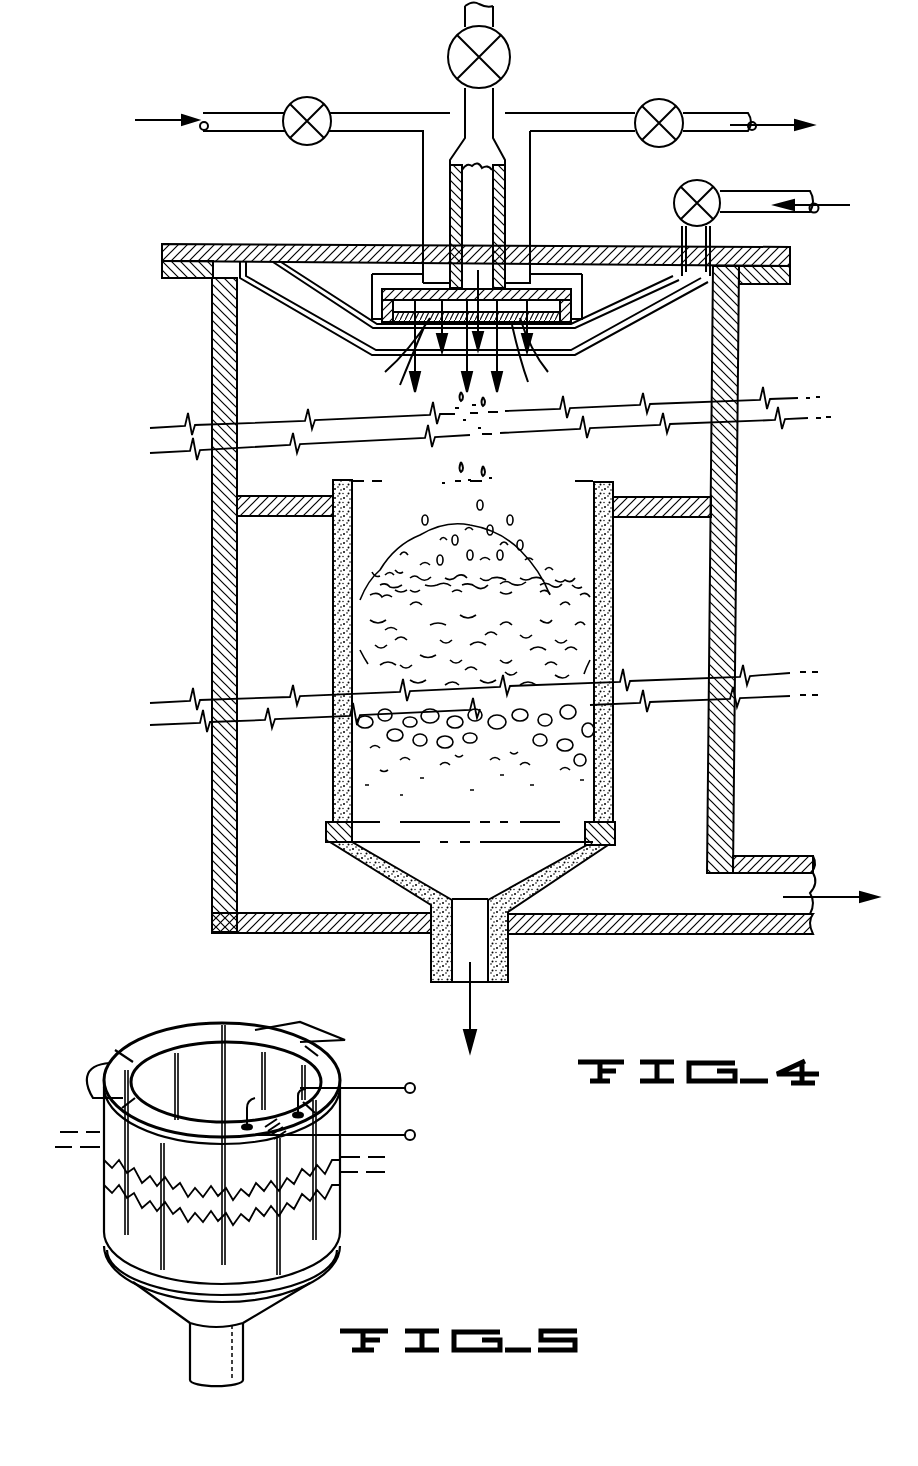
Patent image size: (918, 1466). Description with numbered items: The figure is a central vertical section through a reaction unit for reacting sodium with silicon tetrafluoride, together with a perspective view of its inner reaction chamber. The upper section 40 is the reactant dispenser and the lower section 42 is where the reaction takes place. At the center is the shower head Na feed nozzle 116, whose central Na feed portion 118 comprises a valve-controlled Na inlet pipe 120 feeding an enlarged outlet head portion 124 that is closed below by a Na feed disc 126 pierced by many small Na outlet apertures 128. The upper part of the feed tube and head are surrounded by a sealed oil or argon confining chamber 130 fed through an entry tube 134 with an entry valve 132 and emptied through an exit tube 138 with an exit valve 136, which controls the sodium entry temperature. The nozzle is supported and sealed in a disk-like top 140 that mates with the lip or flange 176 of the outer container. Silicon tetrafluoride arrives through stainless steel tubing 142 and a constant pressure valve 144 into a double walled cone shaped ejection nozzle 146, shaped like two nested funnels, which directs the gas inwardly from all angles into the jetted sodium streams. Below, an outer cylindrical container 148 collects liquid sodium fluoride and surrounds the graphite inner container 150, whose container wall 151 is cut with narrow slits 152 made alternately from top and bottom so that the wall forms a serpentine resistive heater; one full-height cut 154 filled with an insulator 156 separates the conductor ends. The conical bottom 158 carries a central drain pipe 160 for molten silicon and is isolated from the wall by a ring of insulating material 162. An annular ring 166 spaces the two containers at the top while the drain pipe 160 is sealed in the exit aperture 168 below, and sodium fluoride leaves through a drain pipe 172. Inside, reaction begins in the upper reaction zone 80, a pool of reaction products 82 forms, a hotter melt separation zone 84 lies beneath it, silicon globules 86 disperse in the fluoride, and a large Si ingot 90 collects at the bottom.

In FIG. 4, the upper section 40 is at (170, 188).
In FIG. 4, the lower section 42 is at (158, 602).
In FIG. 4, the upper reaction zone 80 is at (590, 527).
In FIG. 4, the pool of reaction products 82 is at (520, 612).
In FIG. 4, the melt separation zone 84 is at (575, 715).
In FIG. 4, the Si globules 86 is at (580, 748).
In FIG. 4, the Si ingot 90 is at (492, 810).
In FIG. 4, the shower head Na feed nozzle 116 is at (561, 222).
In FIG. 4, the central Na feed portion 118 is at (372, 345).
In FIG. 4, the Na inlet pipe 120 is at (497, 50).
In FIG. 4, the enlarged outlet head portion 124 is at (571, 325).
In FIG. 4, the Na feed disc 126 is at (422, 338).
In FIG. 4, the Na outlet apertures 128 is at (508, 345).
In FIG. 4, the oil or argon confining chamber 130 is at (430, 190).
In FIG. 4, the entry valve 132 is at (300, 102).
In FIG. 4, the entry tube 134 is at (368, 112).
In FIG. 4, the exit valve 136 is at (652, 105).
In FIG. 4, the oil or argon exit tube 138 is at (712, 112).
In FIG. 4, the disk-like top 140 is at (287, 244).
In FIG. 4, the stainless steel tubing 142 is at (773, 192).
In FIG. 4, the constant pressure valve 144 is at (700, 186).
In FIG. 4, the double walled cone shaped ejection nozzle 146 is at (630, 310).
In FIG. 4, the outer cylindrical container 148 is at (737, 508).
In FIG. 4, the inner cylindrical container 150 is at (613, 628).
In FIG. 5, the inner cylindrical container 150 is at (330, 1238).
In FIG. 4, the container wall 151 is at (600, 483).
In FIG. 5, the container wall 151 is at (180, 1032).
In FIG. 5, the slits 152 is at (350, 1038).
In FIG. 5, the cut 154 is at (285, 1255).
In FIG. 5, the insulator 156 is at (272, 1285).
In FIG. 4, the bottom 158 is at (365, 860).
In FIG. 5, the bottom 158 is at (178, 1305).
In FIG. 4, the drain pipe 160 is at (498, 955).
In FIG. 5, the drain pipe 160 is at (243, 1352).
In FIG. 4, the ring of insulating material 162 is at (326, 830).
In FIG. 5, the ring of insulating material 162 is at (118, 1265).
In FIG. 4, the annular ring 166 is at (285, 496).
In FIG. 4, the exit aperture 168 is at (430, 940).
In FIG. 4, the drain pipe 172 is at (750, 865).
In FIG. 4, the lip or flange 176 is at (185, 280).